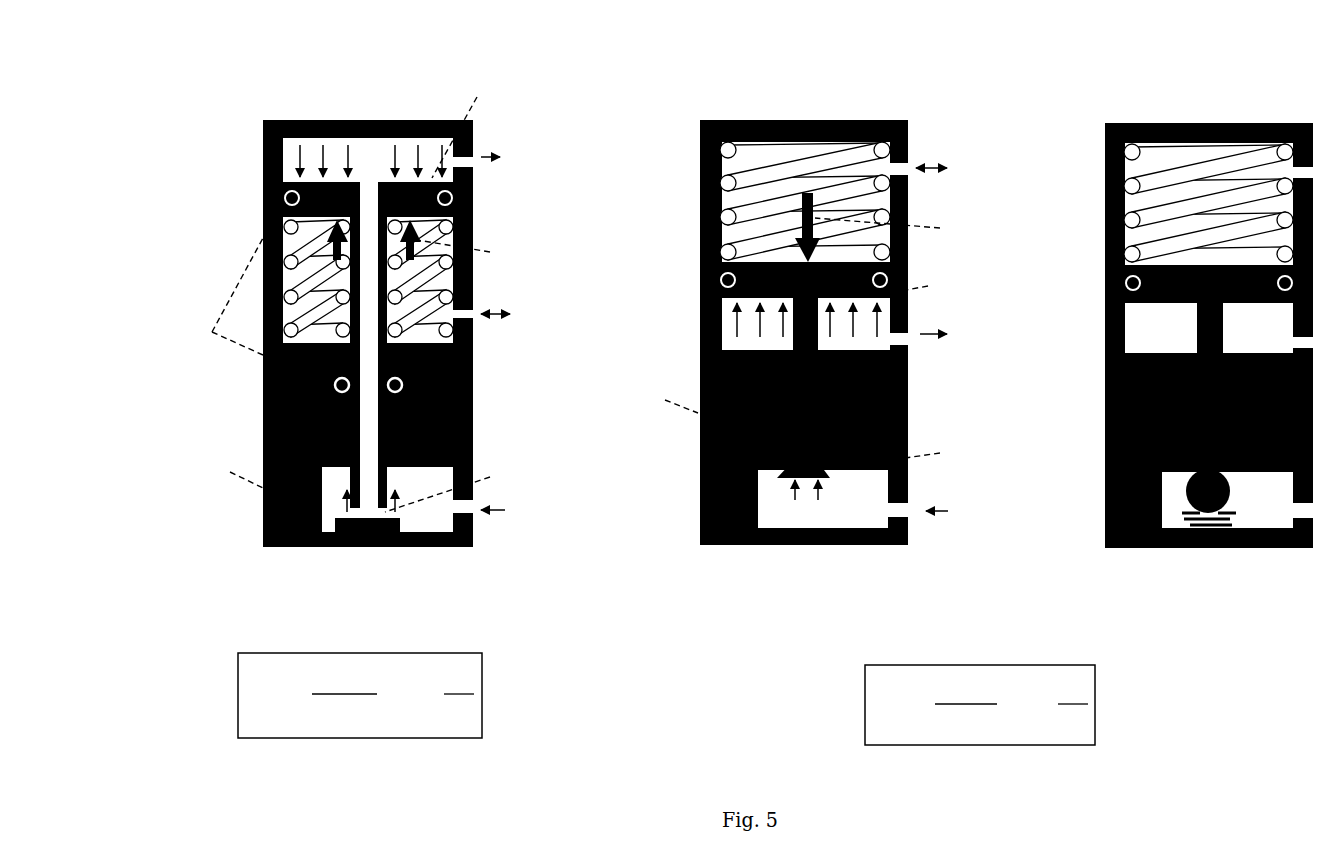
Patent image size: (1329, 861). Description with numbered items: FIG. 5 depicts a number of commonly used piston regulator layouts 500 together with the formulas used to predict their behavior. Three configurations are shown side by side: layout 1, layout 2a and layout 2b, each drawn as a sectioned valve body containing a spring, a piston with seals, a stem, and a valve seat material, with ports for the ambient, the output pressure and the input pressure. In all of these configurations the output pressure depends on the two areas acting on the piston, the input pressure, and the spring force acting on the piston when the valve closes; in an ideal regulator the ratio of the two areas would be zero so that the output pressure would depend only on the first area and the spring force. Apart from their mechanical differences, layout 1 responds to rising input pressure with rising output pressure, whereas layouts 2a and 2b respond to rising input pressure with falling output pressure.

The piston regulator layouts 500 is at (792, 54).
The layout 1 is at (367, 343).
The layout 2a is at (822, 360).
The layout 2b is at (1209, 362).